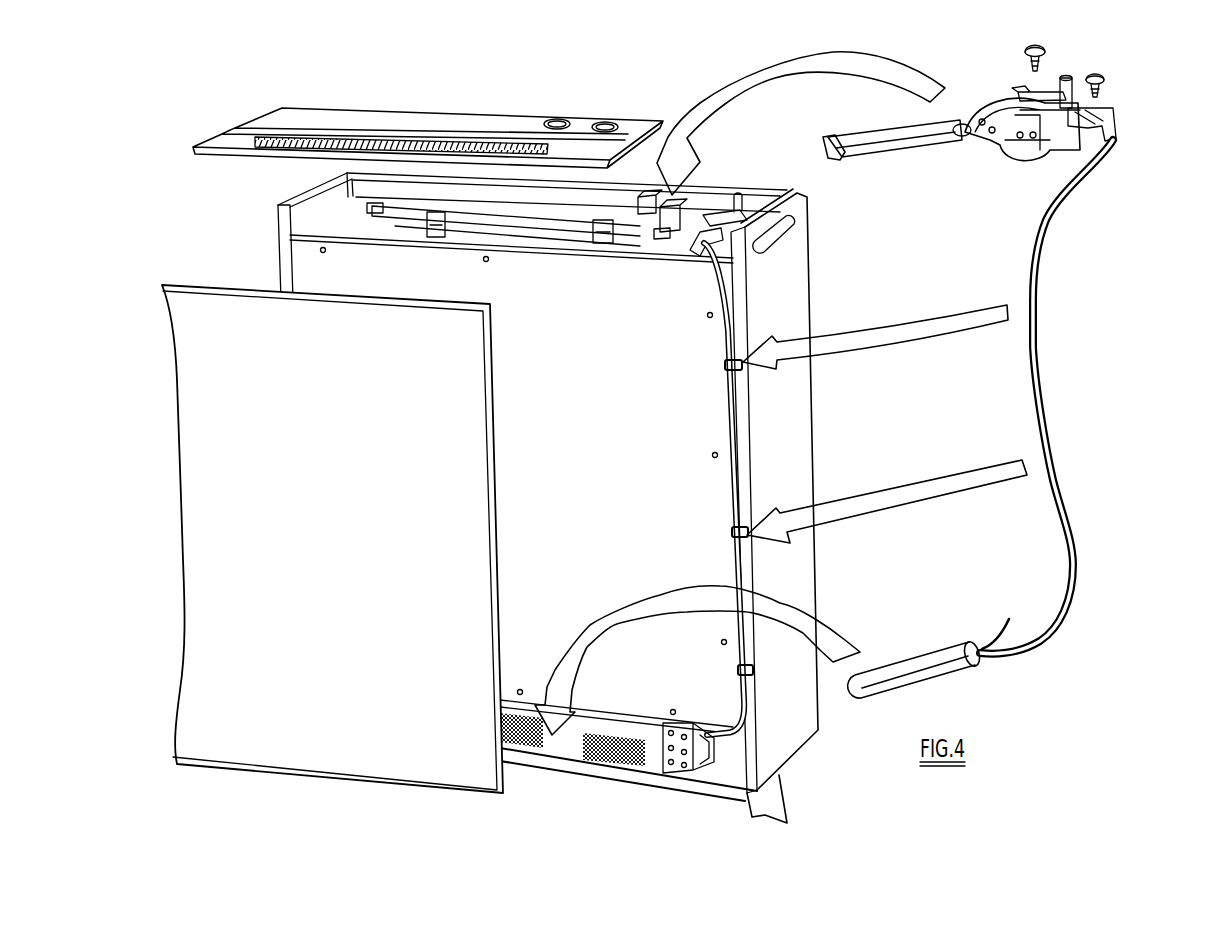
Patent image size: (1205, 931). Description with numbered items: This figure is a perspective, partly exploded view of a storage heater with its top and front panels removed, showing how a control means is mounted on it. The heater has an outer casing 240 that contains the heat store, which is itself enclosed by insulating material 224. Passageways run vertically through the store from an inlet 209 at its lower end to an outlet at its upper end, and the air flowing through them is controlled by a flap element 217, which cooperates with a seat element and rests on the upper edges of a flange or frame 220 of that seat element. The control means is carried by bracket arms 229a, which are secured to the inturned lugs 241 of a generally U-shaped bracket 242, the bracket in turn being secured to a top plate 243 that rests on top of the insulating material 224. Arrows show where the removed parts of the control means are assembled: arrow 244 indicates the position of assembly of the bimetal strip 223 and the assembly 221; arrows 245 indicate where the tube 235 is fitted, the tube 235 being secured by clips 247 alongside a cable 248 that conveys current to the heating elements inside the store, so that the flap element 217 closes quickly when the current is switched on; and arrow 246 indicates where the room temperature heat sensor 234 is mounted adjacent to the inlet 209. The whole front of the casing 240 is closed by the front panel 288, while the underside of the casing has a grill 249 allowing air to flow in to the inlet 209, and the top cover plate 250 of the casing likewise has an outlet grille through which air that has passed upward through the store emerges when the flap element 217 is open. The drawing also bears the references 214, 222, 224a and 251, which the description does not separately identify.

The inlet 209 is at (593, 720).
The guide 214 is at (390, 219).
The flap element 217 is at (562, 222).
The flange or frame 220 is at (525, 232).
The assembly 221 is at (1076, 72).
The latch body 222 is at (940, 160).
The bimetal strip 223 is at (905, 136).
The insulating material 224 is at (471, 364).
The tab 224a is at (1030, 93).
The bracket arms 229a is at (1102, 110).
The room temperature heat sensor 234 is at (910, 650).
The tube 235 is at (1077, 549).
The outer casing 240 is at (818, 276).
The inturned lugs 241 is at (647, 191).
The U-shaped bracket 242 is at (660, 240).
The top plate 243 is at (700, 258).
The arrow 244 is at (835, 60).
The arrows 245 is at (900, 318).
The arrow 246 is at (790, 603).
The clips 247 is at (740, 358).
The cable 248 is at (736, 451).
The grill 249 is at (643, 753).
The top cover plate 250 is at (467, 118).
The slot 251 is at (416, 143).
The front panel 288 is at (483, 527).